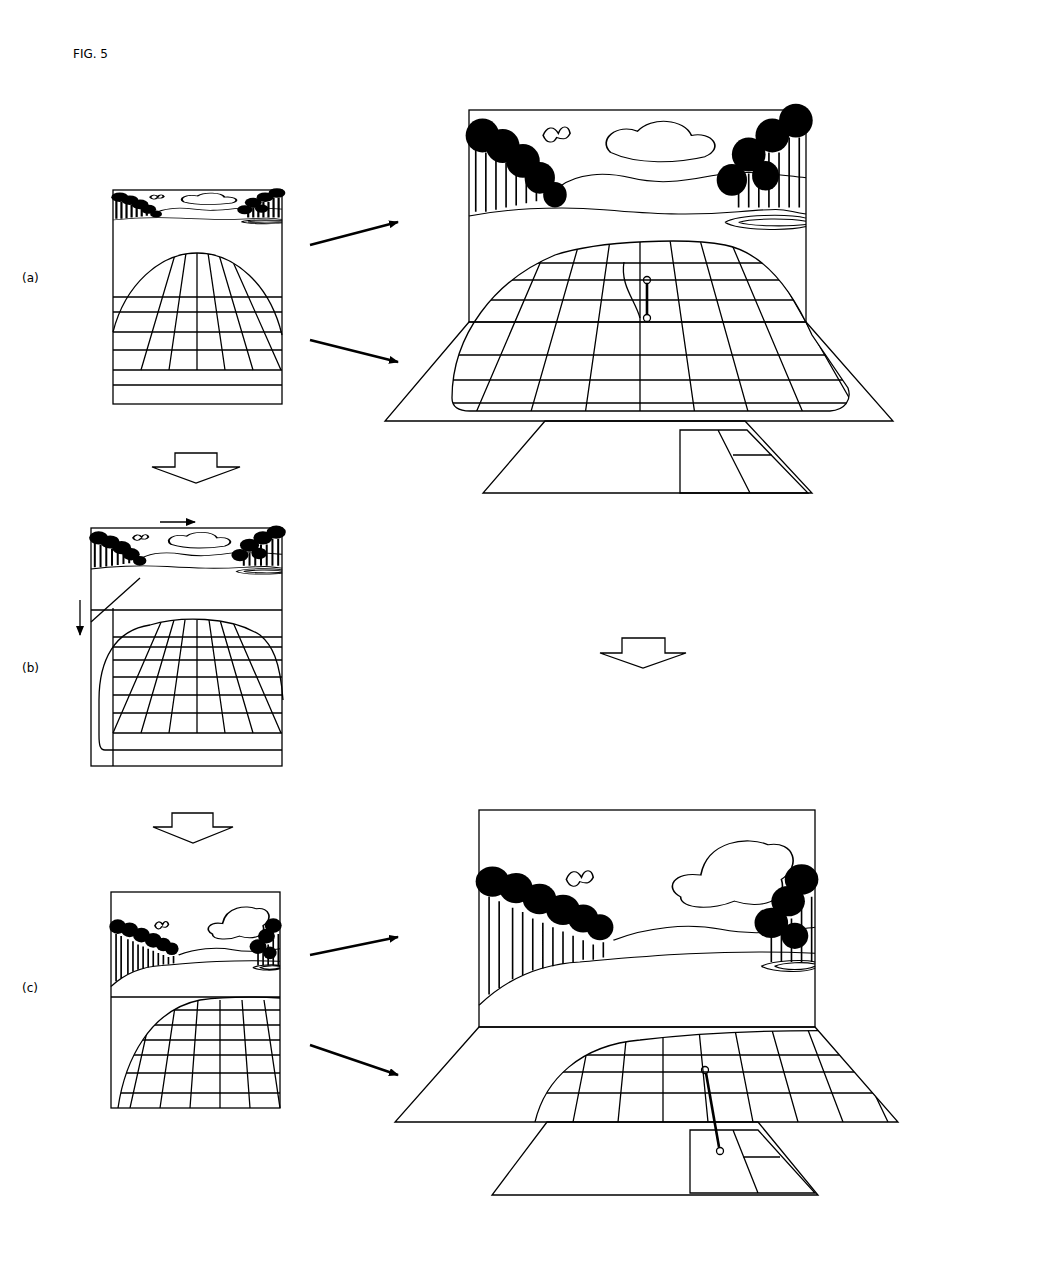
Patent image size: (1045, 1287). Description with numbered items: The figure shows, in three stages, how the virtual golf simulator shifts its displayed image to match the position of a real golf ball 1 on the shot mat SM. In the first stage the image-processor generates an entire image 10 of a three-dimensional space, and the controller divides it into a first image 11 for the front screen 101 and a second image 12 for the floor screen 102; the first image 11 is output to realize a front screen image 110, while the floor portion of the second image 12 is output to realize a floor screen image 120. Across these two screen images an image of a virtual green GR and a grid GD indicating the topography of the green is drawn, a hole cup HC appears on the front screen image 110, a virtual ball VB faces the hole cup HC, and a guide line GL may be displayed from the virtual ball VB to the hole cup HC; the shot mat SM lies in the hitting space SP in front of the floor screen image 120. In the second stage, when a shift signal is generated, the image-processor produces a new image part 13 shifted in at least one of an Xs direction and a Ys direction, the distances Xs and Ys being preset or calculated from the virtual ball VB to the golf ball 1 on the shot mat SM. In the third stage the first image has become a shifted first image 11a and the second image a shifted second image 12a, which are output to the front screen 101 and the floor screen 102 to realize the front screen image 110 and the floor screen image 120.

The entire image 10 is at (178, 187).
The first image 11 is at (113, 232).
The second image 12 is at (113, 352).
The new image part 13 is at (284, 538).
The shifted first image 11a is at (111, 934).
The shifted second image 12a is at (111, 1048).
The front screen 101 is at (806, 130).
The floor screen 102 is at (812, 338).
The front screen image 110 is at (792, 253).
The floor screen image 120 is at (852, 373).
The golf ball 1 is at (716, 1150).
The virtual green GR is at (588, 244).
The grid GD is at (528, 290).
The virtual ball VB is at (626, 281).
The hole cup HC is at (647, 279).
The guide line GL is at (648, 292).
The viewing space SP is at (530, 453).
The shot mat SM is at (677, 455).
The Xs direction Xs is at (177, 512).
The Ys direction Ys is at (69, 617).